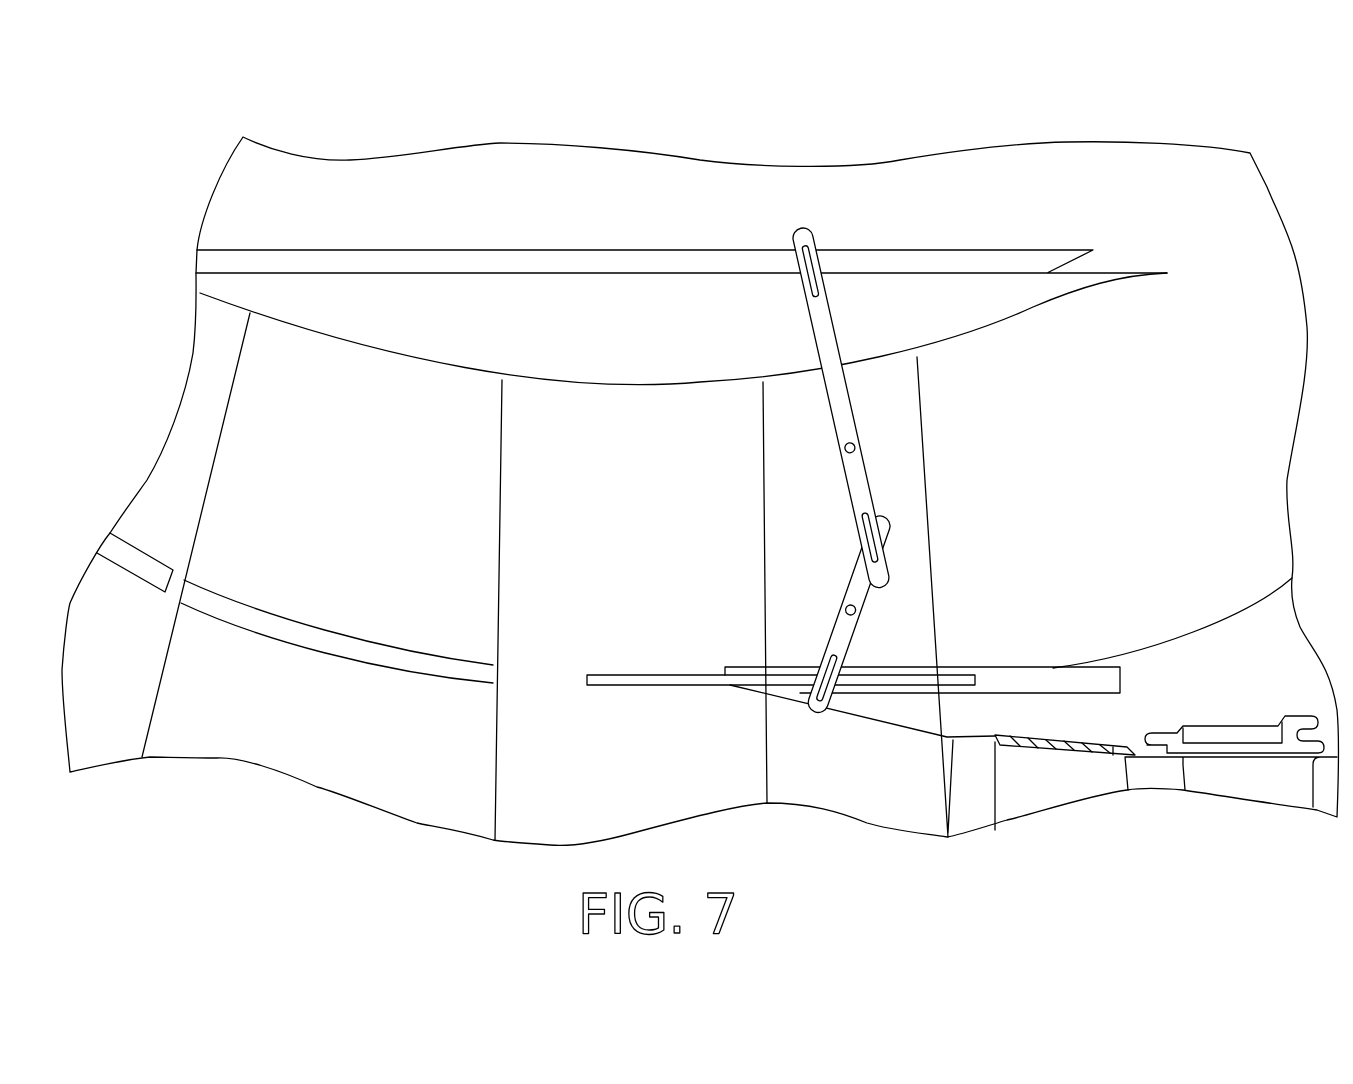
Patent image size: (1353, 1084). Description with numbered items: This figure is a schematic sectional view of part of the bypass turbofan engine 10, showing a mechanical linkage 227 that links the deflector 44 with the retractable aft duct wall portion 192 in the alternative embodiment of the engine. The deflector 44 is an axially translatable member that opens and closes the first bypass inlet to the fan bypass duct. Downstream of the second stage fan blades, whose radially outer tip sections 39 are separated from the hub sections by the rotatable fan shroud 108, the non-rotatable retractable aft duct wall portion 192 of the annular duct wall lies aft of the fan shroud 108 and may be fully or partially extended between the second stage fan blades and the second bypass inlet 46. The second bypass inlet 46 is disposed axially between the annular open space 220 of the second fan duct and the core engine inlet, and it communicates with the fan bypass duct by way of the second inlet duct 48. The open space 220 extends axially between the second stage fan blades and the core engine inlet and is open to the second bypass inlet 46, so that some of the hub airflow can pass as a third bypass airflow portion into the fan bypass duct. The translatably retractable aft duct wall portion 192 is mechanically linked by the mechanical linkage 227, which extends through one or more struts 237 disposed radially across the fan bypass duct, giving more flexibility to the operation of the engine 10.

The bypass turbofan engine 10 is at (388, 81).
The deflector 44 is at (578, 250).
The tip sections 39 is at (424, 402).
The second inlet duct 48 is at (1144, 483).
The second bypass inlet 46 is at (738, 508).
The annular open space 220 is at (646, 785).
The fan shroud 108 is at (302, 658).
The retractable aft duct wall portion 192 is at (618, 672).
The mechanical linkage 227 is at (822, 333).
The struts 237 is at (910, 433).